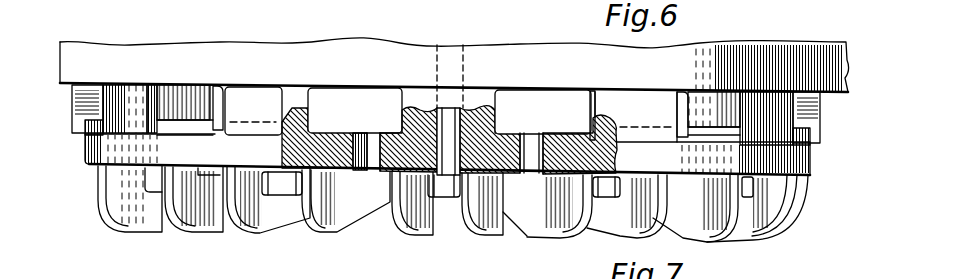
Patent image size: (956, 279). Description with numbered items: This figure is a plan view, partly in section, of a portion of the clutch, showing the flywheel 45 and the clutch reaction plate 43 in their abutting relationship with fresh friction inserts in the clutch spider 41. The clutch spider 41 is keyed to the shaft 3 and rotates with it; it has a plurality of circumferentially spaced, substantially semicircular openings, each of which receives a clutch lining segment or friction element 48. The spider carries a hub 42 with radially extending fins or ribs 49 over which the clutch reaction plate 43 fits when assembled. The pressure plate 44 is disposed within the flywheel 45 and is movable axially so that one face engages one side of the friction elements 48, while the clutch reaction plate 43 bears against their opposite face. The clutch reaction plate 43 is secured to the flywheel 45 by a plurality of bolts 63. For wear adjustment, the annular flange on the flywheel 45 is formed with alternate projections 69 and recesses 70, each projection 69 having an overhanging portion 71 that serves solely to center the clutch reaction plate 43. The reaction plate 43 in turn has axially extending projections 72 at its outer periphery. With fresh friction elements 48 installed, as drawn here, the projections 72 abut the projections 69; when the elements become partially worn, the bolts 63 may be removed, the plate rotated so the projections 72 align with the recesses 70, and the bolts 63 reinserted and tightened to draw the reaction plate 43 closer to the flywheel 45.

The shaft 3 is at (450, 56).
The clutch spider 41 is at (311, 15).
The hub 42 is at (527, 9).
The clutch reaction plate 43 is at (329, 235).
The pressure plate 44 is at (583, 8).
The flywheel 45 is at (174, 50).
The clutch lining segment 48 is at (248, 7).
The fins 49 is at (370, 13).
The bolts 63 is at (445, 120).
The projections 69 is at (211, 95).
The recesses 70 is at (221, 92).
The overhanging portion 71 is at (265, 128).
The projections 72 is at (203, 122).